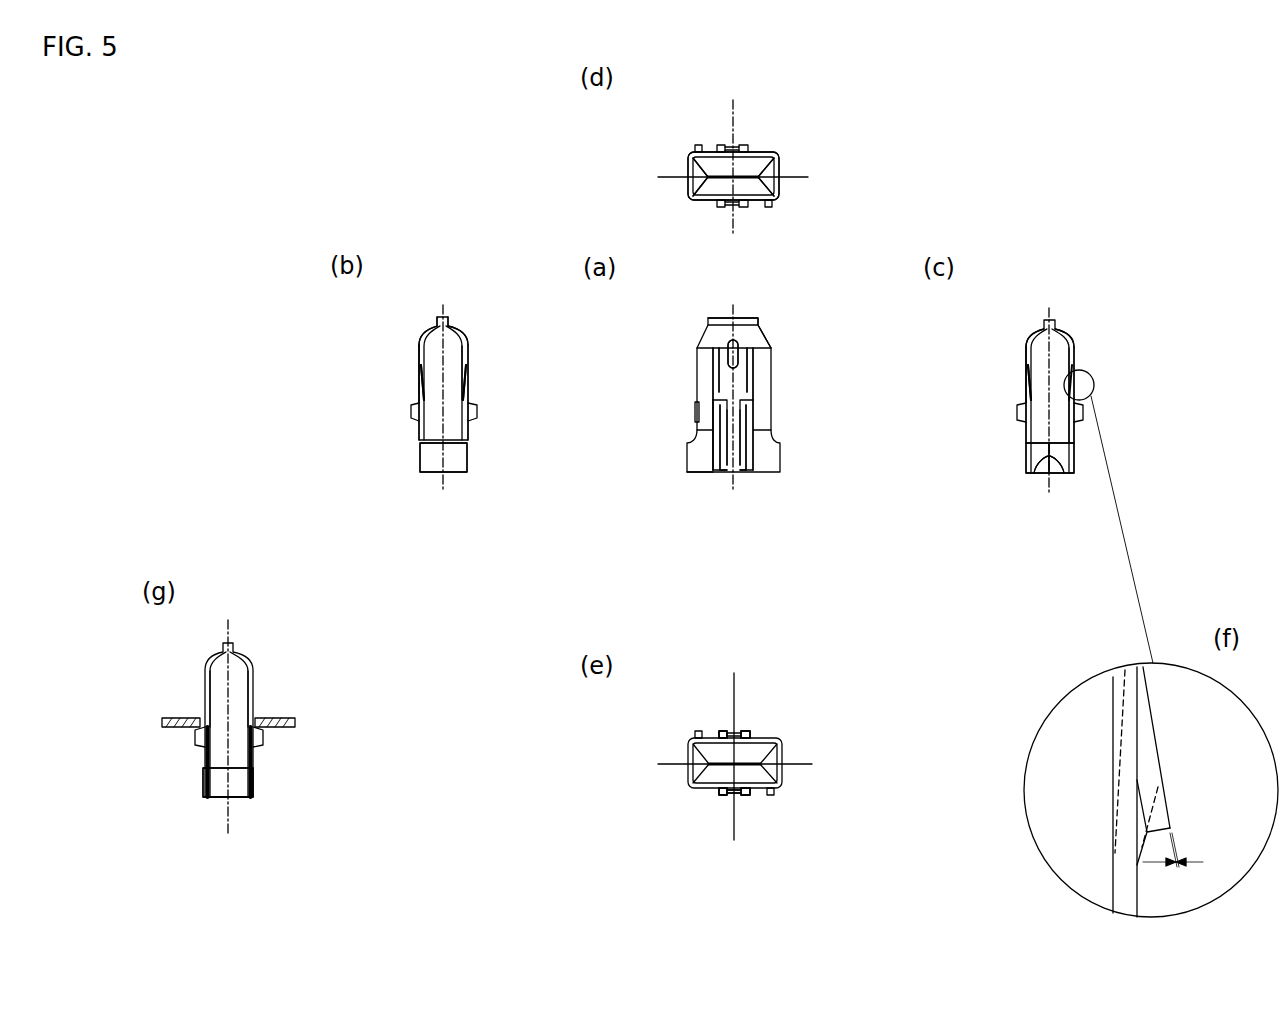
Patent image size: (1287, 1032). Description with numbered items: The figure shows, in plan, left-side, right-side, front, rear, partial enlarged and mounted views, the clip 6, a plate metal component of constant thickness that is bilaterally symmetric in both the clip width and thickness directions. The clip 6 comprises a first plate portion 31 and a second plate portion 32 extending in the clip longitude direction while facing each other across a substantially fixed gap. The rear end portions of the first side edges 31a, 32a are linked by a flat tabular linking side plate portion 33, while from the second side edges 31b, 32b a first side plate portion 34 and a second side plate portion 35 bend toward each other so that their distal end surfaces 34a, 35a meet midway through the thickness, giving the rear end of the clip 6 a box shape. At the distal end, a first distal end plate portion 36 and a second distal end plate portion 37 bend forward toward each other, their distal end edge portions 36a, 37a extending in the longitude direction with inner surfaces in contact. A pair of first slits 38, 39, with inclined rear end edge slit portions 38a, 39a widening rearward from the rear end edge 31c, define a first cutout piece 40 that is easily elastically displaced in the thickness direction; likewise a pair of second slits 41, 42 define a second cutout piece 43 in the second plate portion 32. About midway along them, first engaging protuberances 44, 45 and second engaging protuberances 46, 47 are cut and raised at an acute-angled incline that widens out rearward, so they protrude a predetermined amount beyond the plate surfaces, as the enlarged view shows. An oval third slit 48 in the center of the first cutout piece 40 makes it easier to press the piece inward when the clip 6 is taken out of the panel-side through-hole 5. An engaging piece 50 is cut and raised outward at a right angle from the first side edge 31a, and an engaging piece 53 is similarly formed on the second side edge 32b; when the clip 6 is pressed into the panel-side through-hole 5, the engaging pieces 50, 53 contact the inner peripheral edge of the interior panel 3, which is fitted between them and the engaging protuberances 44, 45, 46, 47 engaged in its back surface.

The clip 6 is at (686, 142).
The interior panel 3 is at (287, 716).
The panel-side through-hole 5 is at (196, 737).
The first plate portion 31 is at (758, 203).
The first side edge 31a is at (465, 382).
The second side edge 31b is at (1077, 362).
The rear end edge 31c is at (702, 472).
The second plate portion 32 is at (762, 148).
The first side edge 32a is at (415, 400).
The second side edge 32b is at (1020, 401).
The linking side plate portion 33 is at (688, 170).
The first side plate portion 34 is at (1030, 468).
The distal end surface 34a is at (1062, 473).
The second side plate portion 35 is at (1066, 460).
The distal end surface 35a is at (1046, 465).
The first distal end plate portion 36 is at (760, 336).
The distal end edge portion 36a is at (449, 322).
The second distal end plate portion 37 is at (433, 330).
The distal end edge portion 37a is at (437, 322).
The first slit 38 is at (718, 453).
The rear end edge slit portion 38a is at (725, 473).
The first slit 39 is at (750, 451).
The rear end edge slit portion 39a is at (745, 473).
The first cutout piece 40 is at (744, 400).
The second slit 41 is at (720, 792).
The second slit 42 is at (746, 793).
The second cutout piece 43 is at (735, 794).
The first engaging protuberance 44 is at (716, 386).
The first engaging protuberance 45 is at (750, 387).
The second engaging protuberance 46 is at (415, 392).
The second engaging protuberance 47 is at (1087, 390).
The third slit 48 is at (740, 356).
The engaging piece 50 is at (697, 145).
The engaging piece 53 is at (773, 204).